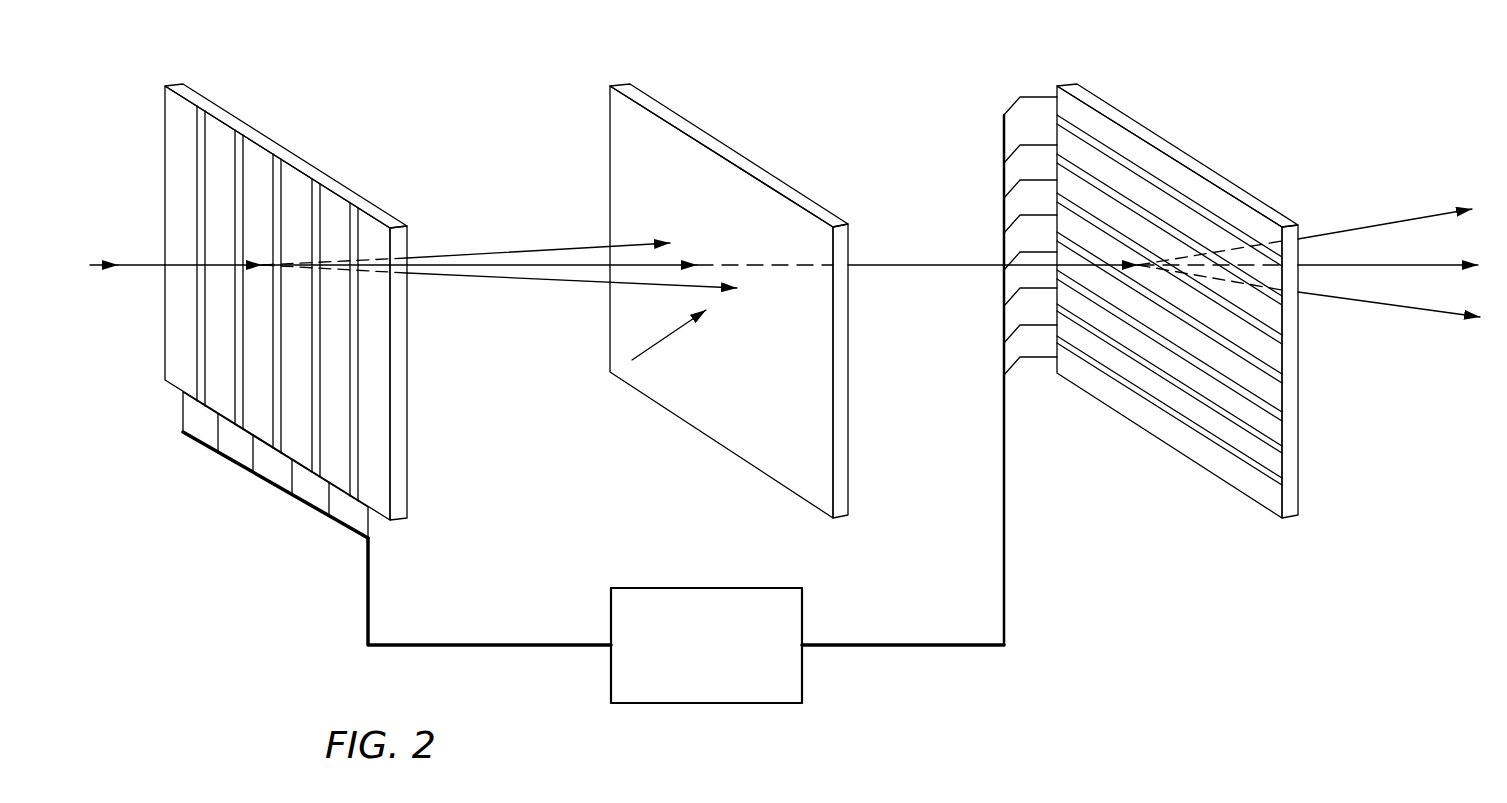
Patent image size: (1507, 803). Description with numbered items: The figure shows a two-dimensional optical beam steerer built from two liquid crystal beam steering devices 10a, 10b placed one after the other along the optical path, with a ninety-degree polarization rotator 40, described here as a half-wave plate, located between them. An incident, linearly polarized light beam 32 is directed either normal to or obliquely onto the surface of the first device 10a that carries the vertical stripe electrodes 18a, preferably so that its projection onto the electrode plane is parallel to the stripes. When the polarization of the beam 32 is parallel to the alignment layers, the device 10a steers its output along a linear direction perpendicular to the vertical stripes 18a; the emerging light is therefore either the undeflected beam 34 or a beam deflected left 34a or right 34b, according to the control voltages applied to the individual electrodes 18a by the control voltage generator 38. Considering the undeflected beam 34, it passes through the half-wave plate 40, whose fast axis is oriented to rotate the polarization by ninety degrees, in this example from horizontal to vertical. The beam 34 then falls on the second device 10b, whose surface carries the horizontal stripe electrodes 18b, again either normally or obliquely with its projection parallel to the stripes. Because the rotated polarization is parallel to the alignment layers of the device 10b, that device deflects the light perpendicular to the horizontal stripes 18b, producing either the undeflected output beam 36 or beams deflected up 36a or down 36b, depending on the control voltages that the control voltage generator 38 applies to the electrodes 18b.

The beam steering device 10a is at (357, 348).
The beam steering device 10b is at (1050, 353).
The vertical stripe electrodes 18a is at (213, 195).
The horizontal stripe electrodes 18b is at (1212, 418).
The incident light beam 32 is at (131, 270).
The undeflected beam 34 is at (515, 268).
The left-deflected beam 34a is at (498, 252).
The right-deflected beam 34b is at (470, 280).
The undeflected output beam 36 is at (1405, 268).
The up-deflected beam 36a is at (1398, 221).
The down-deflected beam 36b is at (1380, 305).
The control voltage generator 38 is at (750, 588).
The polarization rotator 40 is at (676, 118).